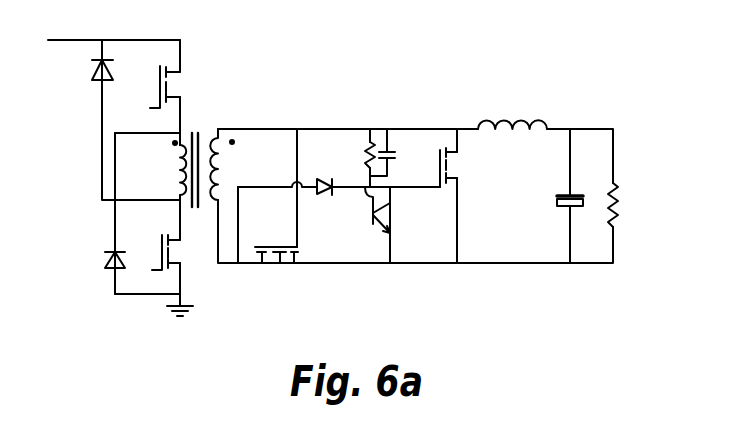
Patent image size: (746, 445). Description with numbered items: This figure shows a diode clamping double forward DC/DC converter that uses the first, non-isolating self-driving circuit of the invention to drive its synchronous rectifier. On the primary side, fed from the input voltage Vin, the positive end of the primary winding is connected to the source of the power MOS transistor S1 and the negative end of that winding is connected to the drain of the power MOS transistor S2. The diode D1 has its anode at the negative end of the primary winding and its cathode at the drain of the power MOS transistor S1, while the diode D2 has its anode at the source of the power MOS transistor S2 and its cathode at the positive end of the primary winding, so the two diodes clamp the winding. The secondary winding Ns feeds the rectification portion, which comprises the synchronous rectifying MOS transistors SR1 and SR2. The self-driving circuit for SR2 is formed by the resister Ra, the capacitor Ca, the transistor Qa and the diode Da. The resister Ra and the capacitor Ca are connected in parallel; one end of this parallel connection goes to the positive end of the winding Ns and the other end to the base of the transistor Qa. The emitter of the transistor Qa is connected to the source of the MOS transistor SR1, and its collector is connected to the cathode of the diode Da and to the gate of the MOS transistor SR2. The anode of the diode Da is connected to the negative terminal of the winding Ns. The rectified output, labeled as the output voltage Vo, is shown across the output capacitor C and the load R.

The input voltage Vin is at (113, 25).
The diode D1 is at (84, 71).
The power MOS transistor S1 is at (153, 87).
The diode D2 is at (94, 263).
The power MOS transistor S2 is at (154, 252).
The winding Ns is at (231, 164).
The synchronous rectifying MOS transistor SR1 is at (278, 272).
The diode Da is at (325, 202).
The resister Ra is at (352, 156).
The capacitor Ca is at (402, 157).
The transistor Qa is at (397, 213).
The synchronous rectifying MOS transistor SR2 is at (477, 167).
The output voltage Vo is at (620, 112).
The output capacitor C is at (556, 199).
The load resistor R is at (628, 205).